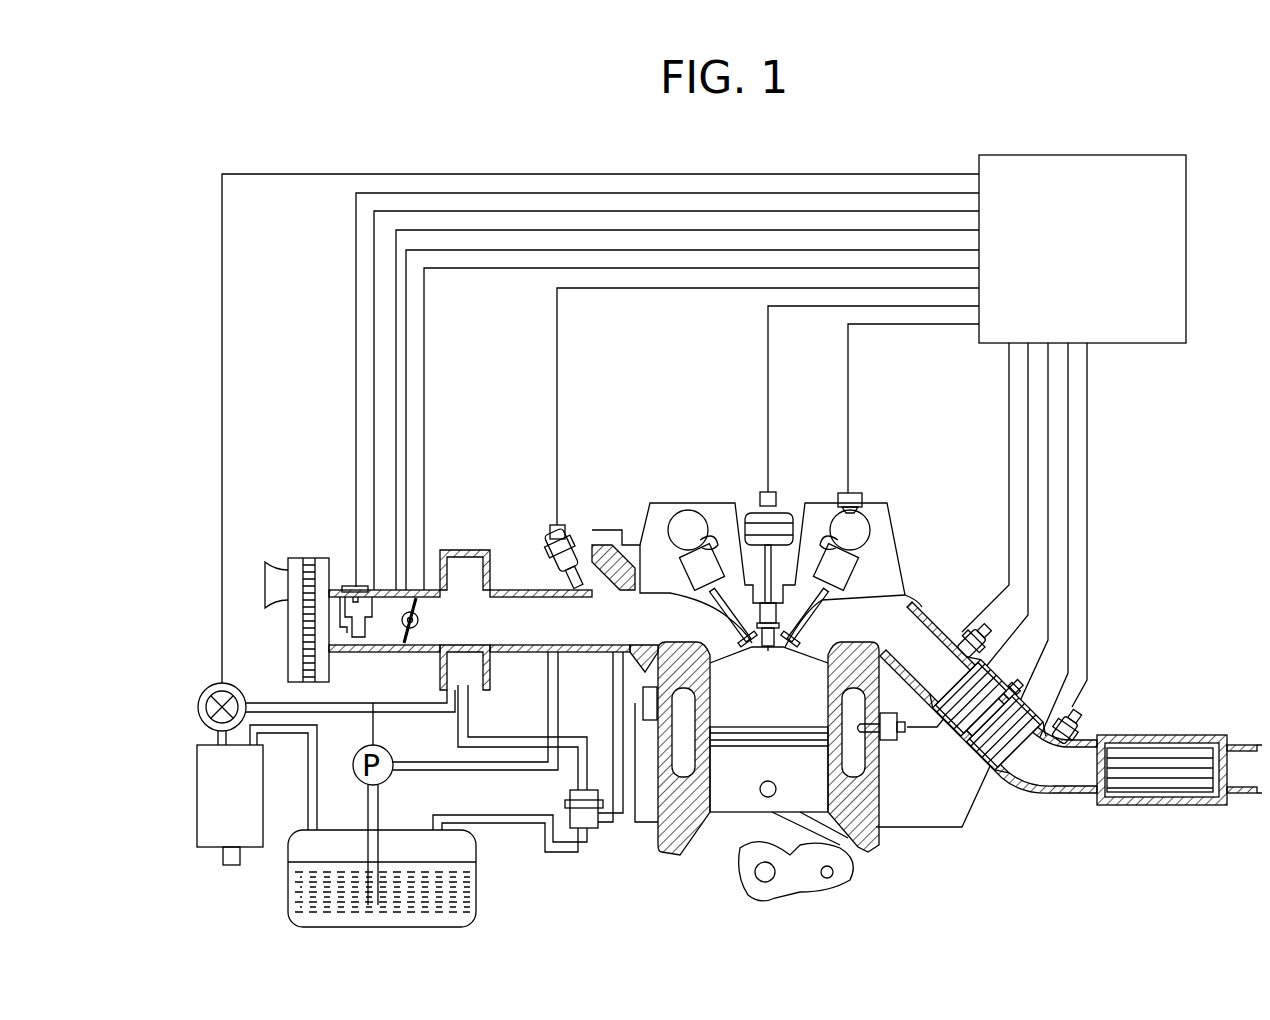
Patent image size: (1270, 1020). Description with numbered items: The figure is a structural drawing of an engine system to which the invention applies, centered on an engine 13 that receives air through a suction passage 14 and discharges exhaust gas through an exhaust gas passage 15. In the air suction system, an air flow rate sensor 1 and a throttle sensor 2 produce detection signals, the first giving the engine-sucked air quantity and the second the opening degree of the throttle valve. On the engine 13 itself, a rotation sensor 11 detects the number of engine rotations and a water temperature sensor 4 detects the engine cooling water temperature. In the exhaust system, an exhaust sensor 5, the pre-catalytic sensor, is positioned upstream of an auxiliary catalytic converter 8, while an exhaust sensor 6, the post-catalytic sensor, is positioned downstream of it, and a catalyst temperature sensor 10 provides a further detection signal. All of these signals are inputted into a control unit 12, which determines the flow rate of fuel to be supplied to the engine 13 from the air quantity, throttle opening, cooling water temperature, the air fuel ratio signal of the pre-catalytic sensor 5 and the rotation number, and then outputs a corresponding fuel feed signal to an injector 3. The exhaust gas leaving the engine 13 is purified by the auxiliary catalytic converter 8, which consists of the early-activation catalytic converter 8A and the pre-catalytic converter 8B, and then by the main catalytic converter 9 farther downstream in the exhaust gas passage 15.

The air flow rate sensor 1 is at (350, 586).
The throttle sensor 2 is at (418, 616).
The injector 3 is at (553, 527).
The water temperature sensor 4 is at (897, 743).
The exhaust sensor 5 is at (975, 628).
The exhaust sensor 6 is at (1080, 714).
The auxiliary catalytic converter 8 is at (985, 794).
The early-activation catalytic converter 8A is at (971, 698).
The pre-catalytic converter 8B is at (950, 752).
The main catalytic converter 9 is at (1160, 793).
The catalyst temperature sensor 10 is at (1005, 688).
The rotation sensor 11 is at (858, 492).
The control unit 12 is at (1186, 243).
The engine 13 is at (878, 858).
The suction passage 14 is at (463, 550).
The exhaust gas passage 15 is at (910, 607).